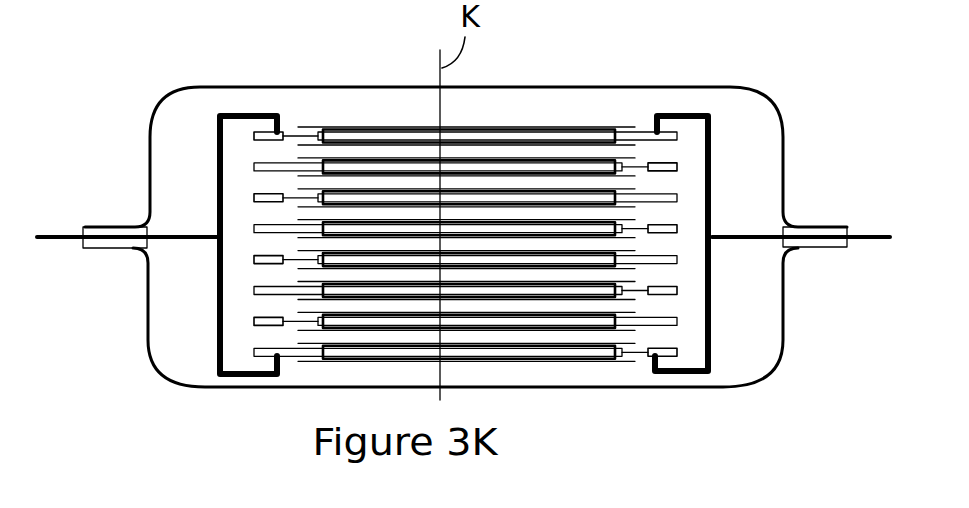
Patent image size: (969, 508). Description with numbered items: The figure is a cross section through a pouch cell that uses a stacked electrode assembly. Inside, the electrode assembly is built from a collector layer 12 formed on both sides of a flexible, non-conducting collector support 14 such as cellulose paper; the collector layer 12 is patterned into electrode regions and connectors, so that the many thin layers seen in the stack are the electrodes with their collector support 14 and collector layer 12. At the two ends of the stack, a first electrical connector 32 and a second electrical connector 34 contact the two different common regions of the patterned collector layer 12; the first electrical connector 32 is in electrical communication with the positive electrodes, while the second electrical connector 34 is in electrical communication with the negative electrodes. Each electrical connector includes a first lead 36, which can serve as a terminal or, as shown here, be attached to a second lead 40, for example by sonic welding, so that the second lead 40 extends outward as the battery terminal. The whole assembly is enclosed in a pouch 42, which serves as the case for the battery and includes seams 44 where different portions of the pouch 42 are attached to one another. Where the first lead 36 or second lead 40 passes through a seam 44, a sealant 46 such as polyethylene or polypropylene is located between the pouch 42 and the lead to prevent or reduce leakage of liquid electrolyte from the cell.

The collector layer 12 is at (509, 224).
The collector support 14 is at (287, 122).
The first electrical connector 32 is at (712, 183).
The second electrical connector 34 is at (218, 168).
The first lead 36 is at (213, 242).
The second lead 40 is at (57, 240).
The pouch 42 is at (550, 83).
The seam 44 is at (448, 234).
The sealant 46 is at (83, 230).